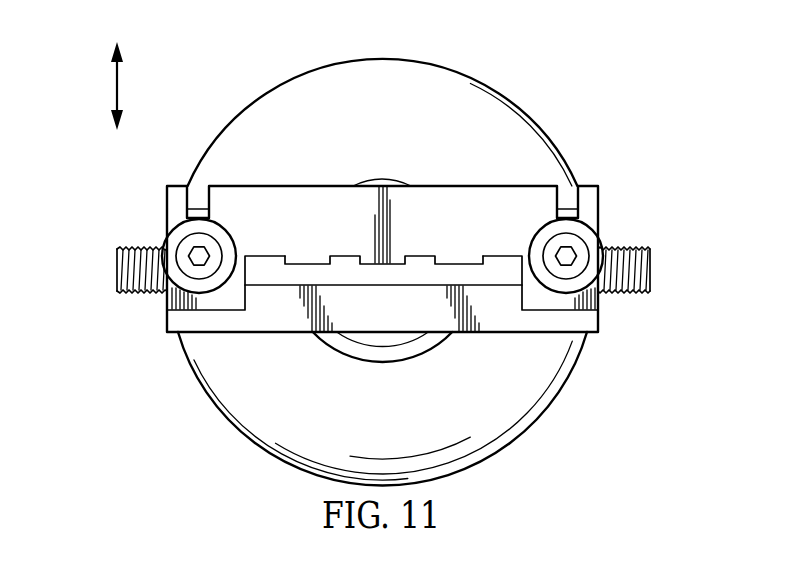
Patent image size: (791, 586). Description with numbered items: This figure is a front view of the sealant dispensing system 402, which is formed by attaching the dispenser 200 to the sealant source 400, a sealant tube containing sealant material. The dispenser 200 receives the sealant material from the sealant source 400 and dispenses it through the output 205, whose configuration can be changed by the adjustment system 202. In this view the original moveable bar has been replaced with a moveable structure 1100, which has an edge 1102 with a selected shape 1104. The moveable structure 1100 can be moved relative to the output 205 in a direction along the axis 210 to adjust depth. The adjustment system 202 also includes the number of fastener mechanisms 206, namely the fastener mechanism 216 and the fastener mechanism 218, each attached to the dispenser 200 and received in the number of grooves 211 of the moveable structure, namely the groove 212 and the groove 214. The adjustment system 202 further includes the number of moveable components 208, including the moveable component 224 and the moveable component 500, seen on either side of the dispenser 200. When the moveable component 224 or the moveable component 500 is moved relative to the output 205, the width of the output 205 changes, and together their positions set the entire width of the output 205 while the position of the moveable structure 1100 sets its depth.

The dispenser 200 is at (277, 186).
The adjustment system 202 is at (515, 186).
The output 205 is at (377, 272).
The number of fastener mechanisms 206 is at (108, 260).
The number of moveable components 208 is at (656, 302).
The axis 210 is at (113, 85).
The number of grooves 211 is at (185, 203).
The groove 212 is at (198, 188).
The groove 214 is at (567, 188).
The fastener mechanism 216 is at (163, 232).
The fastener mechanism 218 is at (607, 237).
The moveable component 224 is at (640, 278).
The moveable component 500 is at (122, 278).
The sealant source 400 is at (455, 73).
The sealant dispensing system 402 is at (527, 80).
The moveable structure 1100 is at (437, 186).
The edge 1102 is at (423, 260).
The selected shape 1104 is at (458, 258).